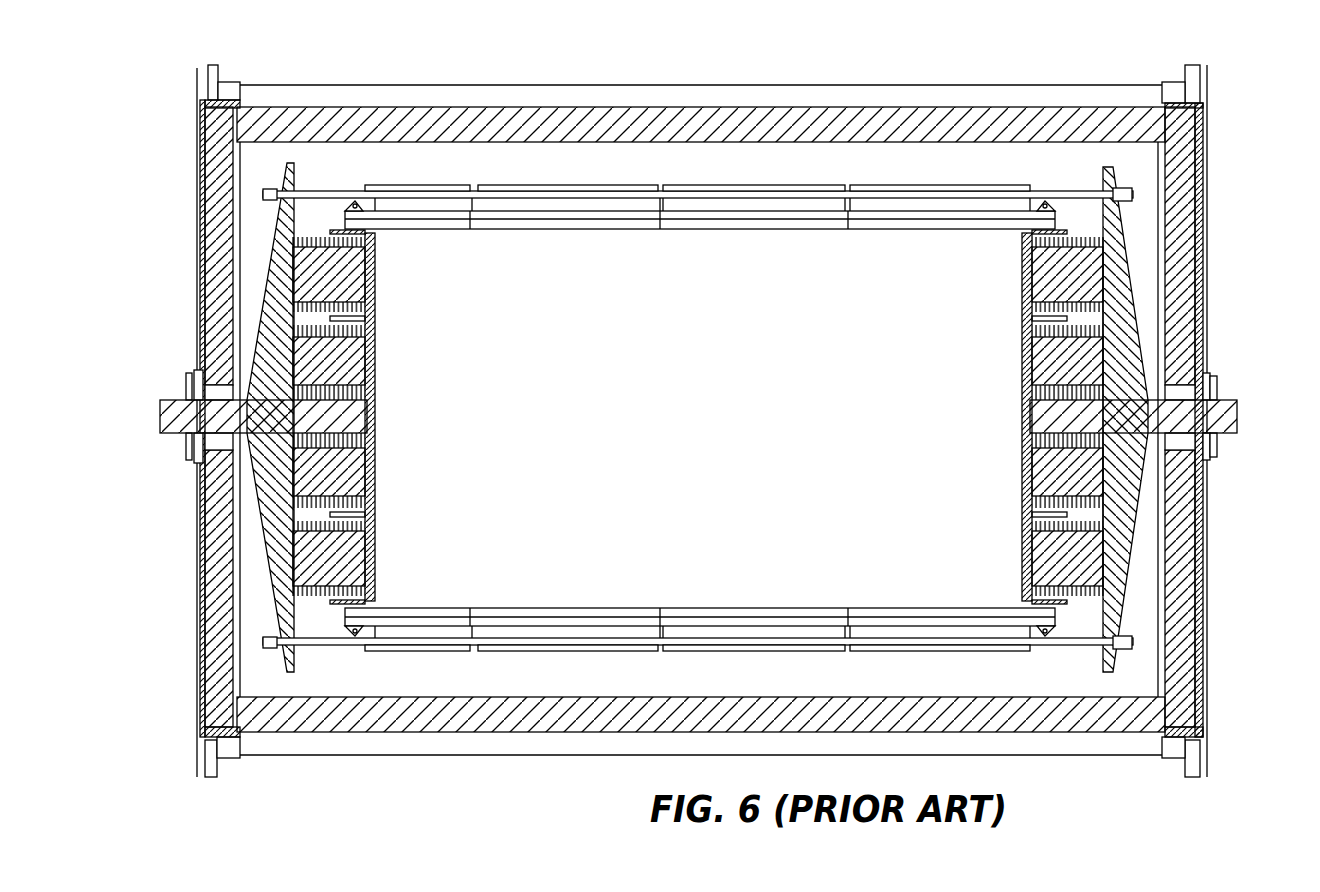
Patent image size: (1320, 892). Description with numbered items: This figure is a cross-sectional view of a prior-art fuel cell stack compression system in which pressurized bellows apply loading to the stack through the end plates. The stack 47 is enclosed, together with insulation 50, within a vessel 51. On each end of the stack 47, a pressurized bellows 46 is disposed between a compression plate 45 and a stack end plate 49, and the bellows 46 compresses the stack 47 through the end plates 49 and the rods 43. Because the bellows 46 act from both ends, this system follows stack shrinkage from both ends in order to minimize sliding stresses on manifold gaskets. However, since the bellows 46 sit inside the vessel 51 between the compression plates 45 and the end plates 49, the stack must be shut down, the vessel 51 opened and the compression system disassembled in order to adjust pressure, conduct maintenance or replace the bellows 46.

The rods 43 is at (755, 185).
The compression plates 45 is at (272, 272).
The pressurized bellows 46 is at (340, 470).
The stack 47 is at (603, 290).
The stack end plates 49 is at (362, 412).
The insulation 50 is at (679, 124).
The vessel 51 is at (940, 96).